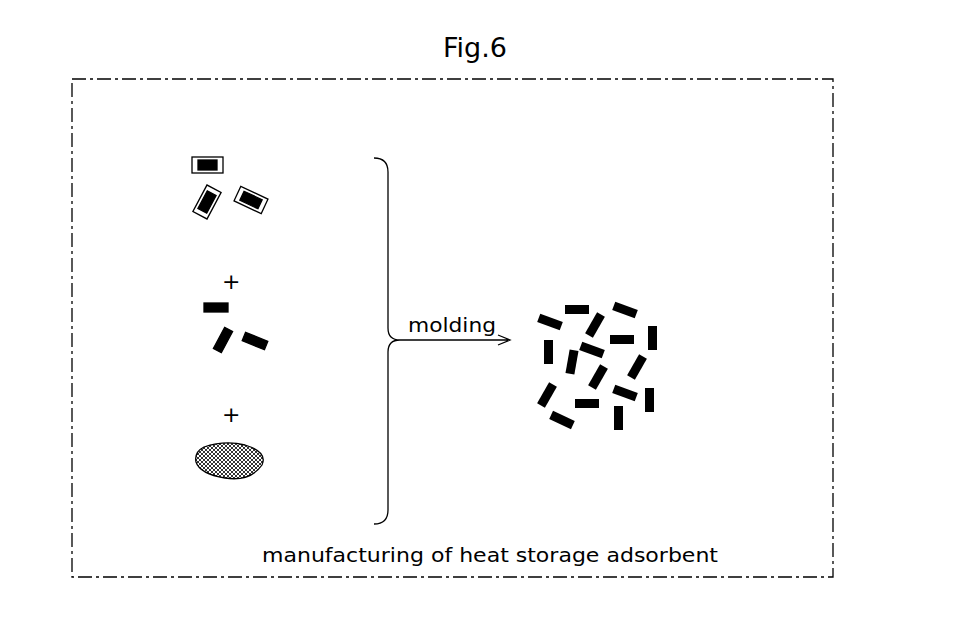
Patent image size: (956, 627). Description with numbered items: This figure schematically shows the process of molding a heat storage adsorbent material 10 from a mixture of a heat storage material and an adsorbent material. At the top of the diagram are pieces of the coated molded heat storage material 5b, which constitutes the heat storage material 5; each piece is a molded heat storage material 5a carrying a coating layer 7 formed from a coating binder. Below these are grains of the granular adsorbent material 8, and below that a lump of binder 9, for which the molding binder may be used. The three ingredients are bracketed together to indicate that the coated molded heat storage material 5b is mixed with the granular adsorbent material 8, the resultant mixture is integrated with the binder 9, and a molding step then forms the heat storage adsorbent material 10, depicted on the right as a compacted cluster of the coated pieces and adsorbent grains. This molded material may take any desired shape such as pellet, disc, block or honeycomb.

The heat storage material 5 is at (222, 181).
The molded heat storage material 5a is at (218, 208).
The coated molded heat storage material 5b is at (185, 208).
The coating layer 7 is at (206, 157).
The granular adsorbent material 8 is at (215, 340).
The binder 9 is at (214, 446).
The heat storage adsorbent material 10 is at (545, 350).